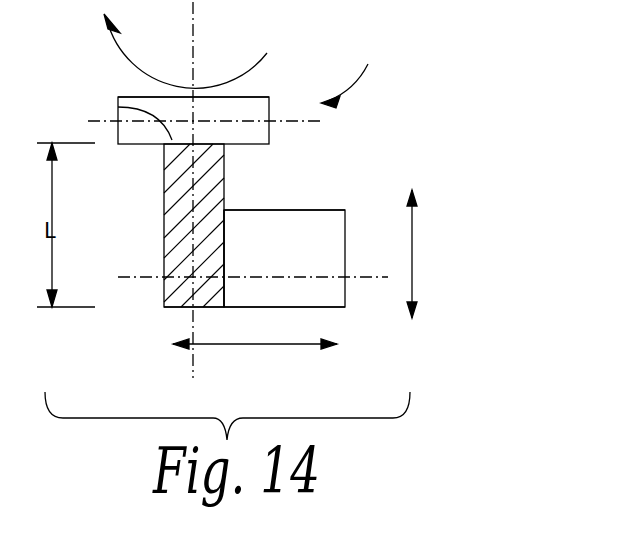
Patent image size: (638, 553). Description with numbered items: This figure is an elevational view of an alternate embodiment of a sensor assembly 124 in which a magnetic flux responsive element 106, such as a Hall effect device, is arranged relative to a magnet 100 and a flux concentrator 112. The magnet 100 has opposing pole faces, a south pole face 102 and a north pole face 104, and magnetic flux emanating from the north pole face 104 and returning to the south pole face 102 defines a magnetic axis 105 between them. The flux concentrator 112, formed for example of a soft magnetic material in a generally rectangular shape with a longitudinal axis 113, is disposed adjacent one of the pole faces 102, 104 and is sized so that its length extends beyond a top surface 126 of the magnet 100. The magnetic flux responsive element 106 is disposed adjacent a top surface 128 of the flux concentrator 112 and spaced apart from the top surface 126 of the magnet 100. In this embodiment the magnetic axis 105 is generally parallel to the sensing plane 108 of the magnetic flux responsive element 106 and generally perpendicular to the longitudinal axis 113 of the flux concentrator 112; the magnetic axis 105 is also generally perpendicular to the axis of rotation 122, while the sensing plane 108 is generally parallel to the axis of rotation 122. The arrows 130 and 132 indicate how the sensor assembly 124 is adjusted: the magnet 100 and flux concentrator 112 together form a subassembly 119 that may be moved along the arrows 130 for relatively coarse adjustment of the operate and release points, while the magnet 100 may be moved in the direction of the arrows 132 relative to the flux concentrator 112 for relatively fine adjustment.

The magnet 100 is at (345, 240).
The south pole face 102 is at (224, 232).
The north pole face 104 is at (347, 298).
The magnetic axis 105 is at (130, 275).
The magnetic flux responsive element 106 is at (270, 100).
The sensing plane 108 is at (305, 123).
The flux concentrator 112 is at (164, 217).
The longitudinal axis 113 is at (193, 68).
The subassembly 119 is at (173, 312).
The axis of rotation 122 is at (197, 2).
The sensor assembly 124 is at (360, 74).
The top surface of the magnet 126 is at (307, 210).
The top surface of the flux concentrator 128 is at (118, 107).
The arrows 130 is at (268, 344).
The arrows 132 is at (412, 268).